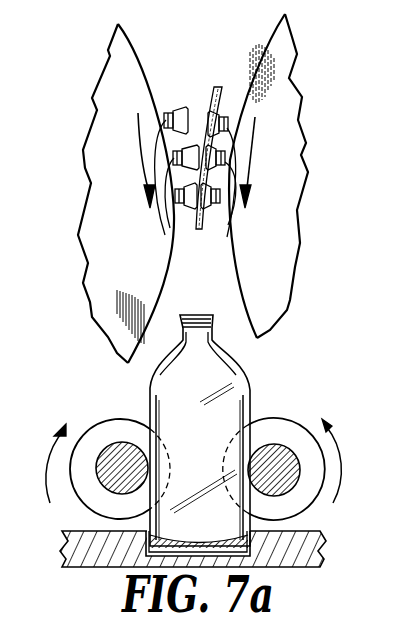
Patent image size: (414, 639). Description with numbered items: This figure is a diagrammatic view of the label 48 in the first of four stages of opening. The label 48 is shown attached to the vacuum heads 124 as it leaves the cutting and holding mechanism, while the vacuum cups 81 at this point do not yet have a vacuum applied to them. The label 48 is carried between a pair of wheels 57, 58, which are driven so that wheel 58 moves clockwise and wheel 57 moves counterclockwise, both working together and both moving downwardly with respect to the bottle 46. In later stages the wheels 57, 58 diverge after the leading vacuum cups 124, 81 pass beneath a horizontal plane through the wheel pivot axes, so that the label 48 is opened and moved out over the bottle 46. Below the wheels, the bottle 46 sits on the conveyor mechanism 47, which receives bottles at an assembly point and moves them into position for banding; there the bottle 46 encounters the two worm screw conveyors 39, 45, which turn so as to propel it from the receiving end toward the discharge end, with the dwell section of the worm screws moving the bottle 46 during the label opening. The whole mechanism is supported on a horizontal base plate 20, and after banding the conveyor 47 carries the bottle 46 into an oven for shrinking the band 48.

The base plate 20 is at (93, 568).
The worm screw conveyor 39 is at (118, 419).
The worm screw conveyor 45 is at (276, 419).
The bottle 46 is at (233, 364).
The conveyor mechanism 47 is at (249, 547).
The label 48 is at (218, 89).
The wheel 57 is at (267, 31).
The wheel 58 is at (142, 67).
The vacuum cup 81 is at (163, 223).
The vacuum head 124 is at (227, 226).